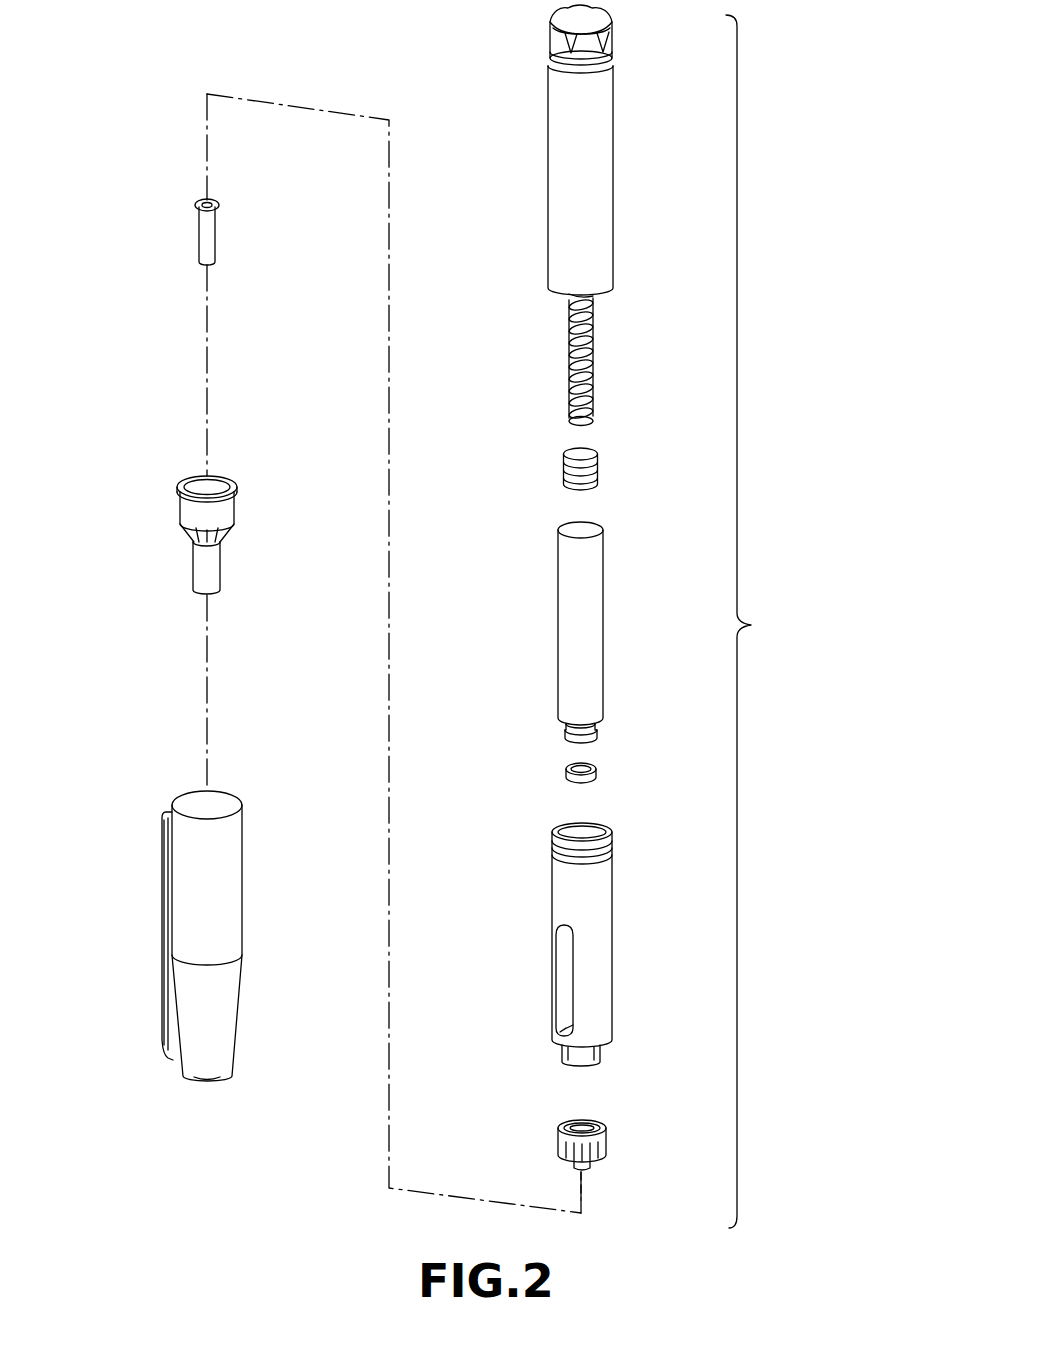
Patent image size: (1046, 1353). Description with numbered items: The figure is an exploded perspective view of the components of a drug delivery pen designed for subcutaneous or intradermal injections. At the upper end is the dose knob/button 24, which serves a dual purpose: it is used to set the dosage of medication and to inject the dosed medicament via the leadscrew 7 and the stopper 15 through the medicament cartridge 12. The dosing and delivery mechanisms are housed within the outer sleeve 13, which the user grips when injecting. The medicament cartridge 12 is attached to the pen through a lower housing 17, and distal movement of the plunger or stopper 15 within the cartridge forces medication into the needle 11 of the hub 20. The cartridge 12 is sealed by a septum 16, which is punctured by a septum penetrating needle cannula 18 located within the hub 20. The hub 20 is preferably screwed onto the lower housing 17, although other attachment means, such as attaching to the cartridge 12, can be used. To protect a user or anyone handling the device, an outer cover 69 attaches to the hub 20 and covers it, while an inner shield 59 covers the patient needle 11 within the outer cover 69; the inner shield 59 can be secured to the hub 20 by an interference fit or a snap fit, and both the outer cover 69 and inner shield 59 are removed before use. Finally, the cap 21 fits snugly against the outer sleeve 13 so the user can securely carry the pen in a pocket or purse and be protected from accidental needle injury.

The dose knob/button 24 is at (614, 42).
The outer sleeve 13 is at (613, 226).
The leadscrew 7 is at (593, 368).
The stopper 15 is at (600, 467).
The medicament cartridge 12 is at (603, 615).
The septum 16 is at (596, 775).
The lower housing 17 is at (612, 950).
The septum penetrating needle cannula 18 is at (581, 1132).
The hub 20 is at (606, 1135).
The needle 11 is at (582, 1183).
The inner shield 59 is at (198, 232).
The outer cover 69 is at (182, 520).
The cap 21 is at (243, 903).